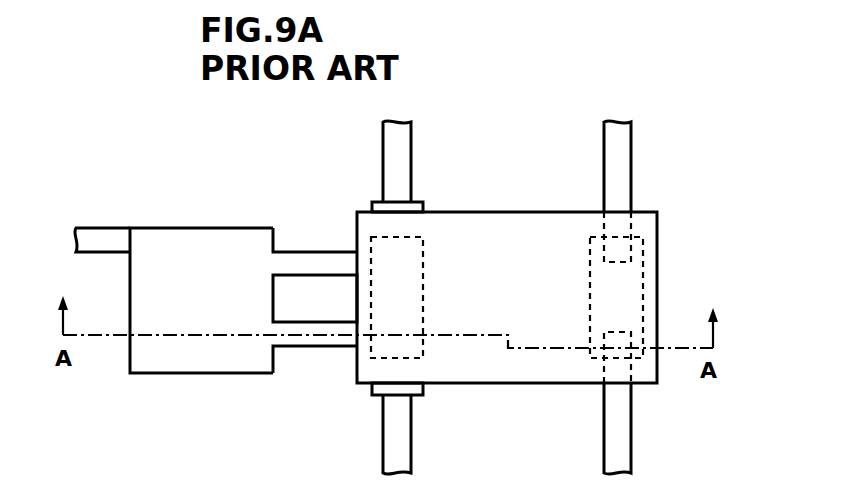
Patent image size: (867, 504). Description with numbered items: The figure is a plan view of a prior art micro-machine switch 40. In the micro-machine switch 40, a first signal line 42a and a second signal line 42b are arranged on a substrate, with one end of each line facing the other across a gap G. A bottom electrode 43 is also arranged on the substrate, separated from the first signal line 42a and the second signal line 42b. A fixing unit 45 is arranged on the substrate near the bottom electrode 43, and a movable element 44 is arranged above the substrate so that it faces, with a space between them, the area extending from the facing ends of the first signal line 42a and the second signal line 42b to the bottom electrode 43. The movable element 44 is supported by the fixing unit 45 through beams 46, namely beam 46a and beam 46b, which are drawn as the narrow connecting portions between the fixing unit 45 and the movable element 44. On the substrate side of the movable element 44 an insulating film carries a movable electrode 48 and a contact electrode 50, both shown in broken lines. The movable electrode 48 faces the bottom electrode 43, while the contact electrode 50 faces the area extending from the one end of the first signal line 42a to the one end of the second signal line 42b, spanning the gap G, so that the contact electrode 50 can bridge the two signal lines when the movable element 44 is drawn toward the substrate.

The micro-machine switch 40 is at (109, 112).
The first signal line 42a is at (632, 452).
The second signal line 42b is at (632, 143).
The bottom electrode 43 is at (418, 392).
The movable element 44 is at (505, 211).
The fixing unit 45 is at (207, 227).
The beams 46 is at (311, 302).
The beam 46a is at (315, 348).
The beam 46b is at (318, 251).
The movable electrode 48 is at (408, 345).
The contact electrode 50 is at (645, 290).
The gap G is at (620, 275).